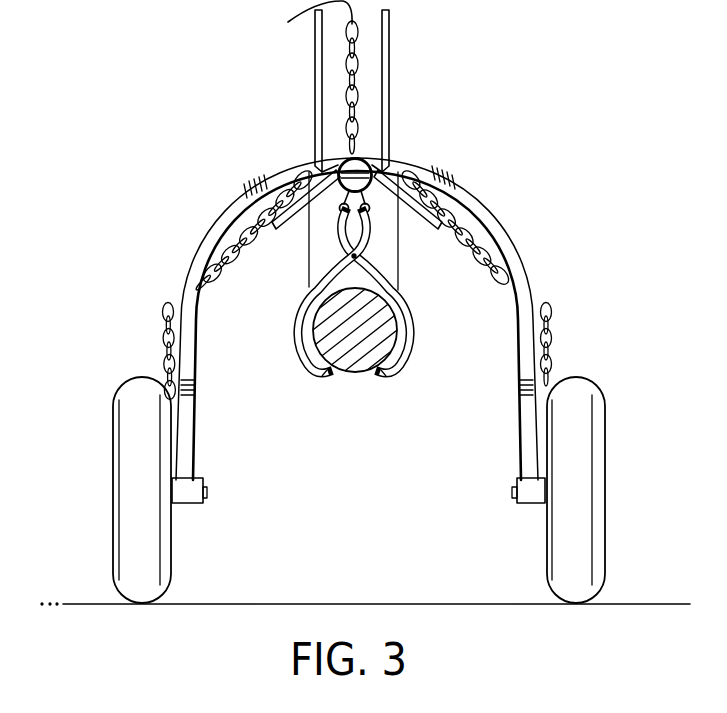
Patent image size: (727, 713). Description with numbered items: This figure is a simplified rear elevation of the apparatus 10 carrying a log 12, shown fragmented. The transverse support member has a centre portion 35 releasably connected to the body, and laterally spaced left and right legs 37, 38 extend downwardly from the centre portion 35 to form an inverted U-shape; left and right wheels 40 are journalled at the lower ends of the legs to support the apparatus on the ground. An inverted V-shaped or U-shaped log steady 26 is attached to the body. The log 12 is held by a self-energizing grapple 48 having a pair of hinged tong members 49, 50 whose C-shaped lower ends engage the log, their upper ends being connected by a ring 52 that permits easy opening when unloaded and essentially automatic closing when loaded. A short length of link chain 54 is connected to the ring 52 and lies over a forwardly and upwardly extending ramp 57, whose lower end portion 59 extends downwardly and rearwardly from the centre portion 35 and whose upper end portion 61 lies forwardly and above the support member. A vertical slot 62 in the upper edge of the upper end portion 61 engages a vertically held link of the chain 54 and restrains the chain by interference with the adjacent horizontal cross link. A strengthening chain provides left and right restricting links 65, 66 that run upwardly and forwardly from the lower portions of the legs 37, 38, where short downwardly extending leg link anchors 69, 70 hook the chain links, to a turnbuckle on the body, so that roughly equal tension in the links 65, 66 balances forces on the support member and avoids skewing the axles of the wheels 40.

The apparatus 10 is at (220, 152).
The log 12 is at (356, 373).
The log steady 26 is at (431, 222).
The centre portion 35 is at (400, 166).
The left leg 37 is at (197, 256).
The right leg 38 is at (515, 258).
The wheels 40 is at (130, 412).
The self-energizing grapple 48 is at (288, 299).
The tong member 49 is at (425, 343).
The tong member 50 is at (297, 352).
The ring 52 is at (361, 162).
The link chain 54 is at (346, 78).
The ramp 57 is at (400, 74).
The lower end portion 59 is at (396, 164).
The upper end portion 61 is at (313, 18).
The vertical slot 62 is at (326, 3).
The left restricting link 65 is at (240, 236).
The right restricting link 66 is at (463, 230).
The left hanging chain 69 is at (165, 313).
The right leg link anchor 70 is at (551, 313).